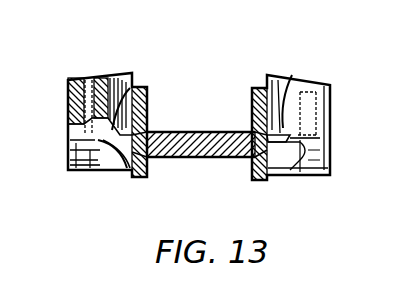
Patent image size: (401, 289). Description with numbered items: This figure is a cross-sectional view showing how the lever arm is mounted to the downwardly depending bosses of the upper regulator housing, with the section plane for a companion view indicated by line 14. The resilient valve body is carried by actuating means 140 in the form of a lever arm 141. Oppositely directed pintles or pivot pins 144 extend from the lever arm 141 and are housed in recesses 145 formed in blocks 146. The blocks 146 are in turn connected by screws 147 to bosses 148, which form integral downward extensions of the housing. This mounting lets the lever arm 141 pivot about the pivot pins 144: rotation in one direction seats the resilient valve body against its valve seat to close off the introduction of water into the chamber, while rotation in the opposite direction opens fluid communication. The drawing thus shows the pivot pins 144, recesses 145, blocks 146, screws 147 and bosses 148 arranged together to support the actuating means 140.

The section line 14- 14 is at (237, 35).
The actuating means 140 is at (177, 162).
The lever arm 141 is at (233, 131).
The pivot pins 144 is at (113, 128).
The recesses 145 is at (142, 134).
The blocks 146 is at (312, 174).
The screws 147 is at (86, 168).
The bosses 148 is at (72, 100).